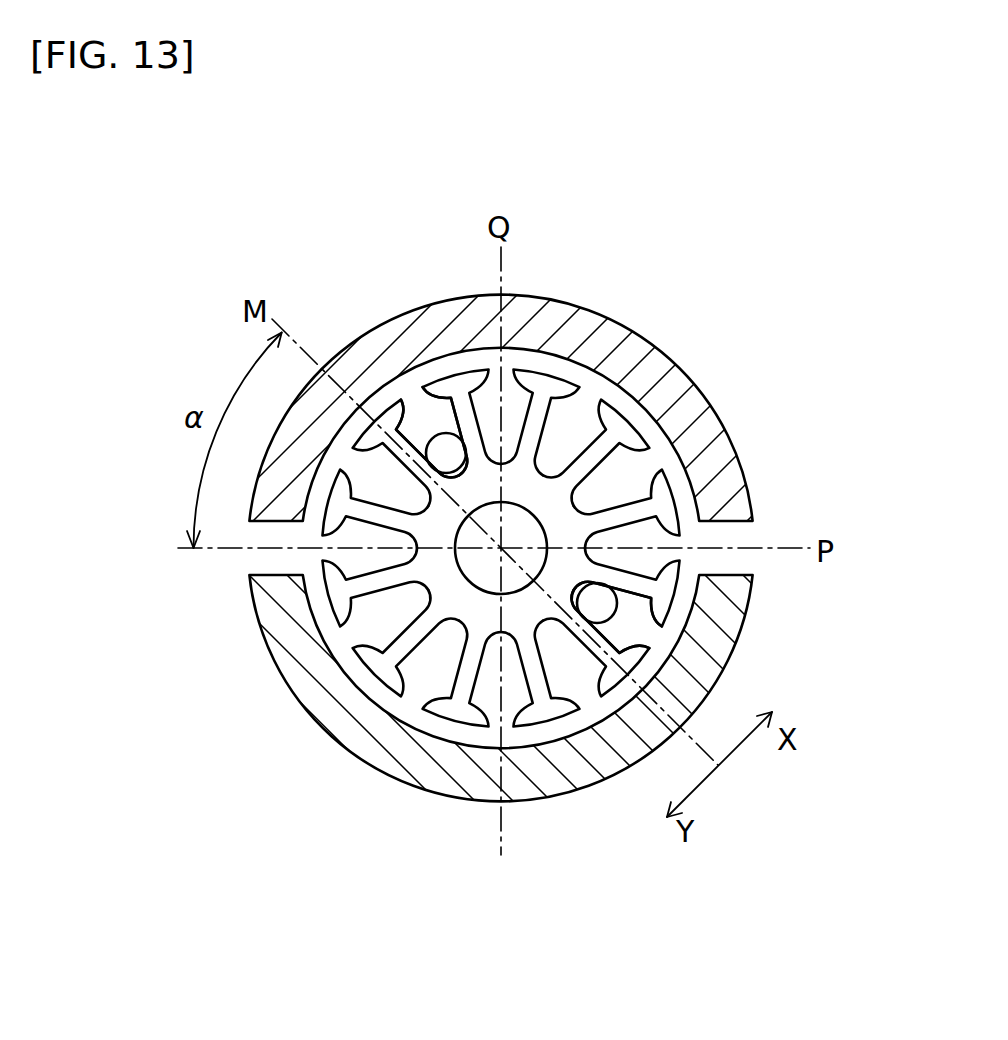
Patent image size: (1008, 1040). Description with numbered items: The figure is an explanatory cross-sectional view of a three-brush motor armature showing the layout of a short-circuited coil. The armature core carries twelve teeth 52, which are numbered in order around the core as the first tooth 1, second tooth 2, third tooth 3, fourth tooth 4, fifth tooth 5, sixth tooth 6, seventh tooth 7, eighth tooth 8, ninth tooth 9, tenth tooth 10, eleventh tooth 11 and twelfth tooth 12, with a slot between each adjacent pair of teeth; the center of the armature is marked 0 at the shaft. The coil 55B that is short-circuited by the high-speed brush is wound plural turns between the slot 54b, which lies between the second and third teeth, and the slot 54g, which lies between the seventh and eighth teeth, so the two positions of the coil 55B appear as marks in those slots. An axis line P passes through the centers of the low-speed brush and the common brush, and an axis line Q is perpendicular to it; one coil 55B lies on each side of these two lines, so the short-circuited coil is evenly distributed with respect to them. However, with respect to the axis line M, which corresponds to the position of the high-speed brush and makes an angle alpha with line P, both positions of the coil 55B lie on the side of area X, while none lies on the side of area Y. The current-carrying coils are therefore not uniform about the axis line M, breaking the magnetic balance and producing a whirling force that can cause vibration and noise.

The teeth 52 is at (602, 547).
The slot 54b is at (438, 422).
The slot 54g is at (617, 637).
The coil 55B is at (446, 453).
The rotor center 0 is at (501, 548).
The first tooth 1 is at (375, 514).
The second tooth 2 is at (408, 455).
The third tooth 3 is at (467, 422).
The fourth tooth 4 is at (534, 422).
The fifth tooth 5 is at (592, 455).
The sixth tooth 6 is at (627, 514).
The seventh tooth 7 is at (627, 581).
The eighth tooth 8 is at (592, 639).
The ninth tooth 9 is at (534, 674).
The tenth tooth 10 is at (467, 674).
The eleventh tooth 11 is at (408, 639).
The twelfth tooth 12 is at (375, 581).